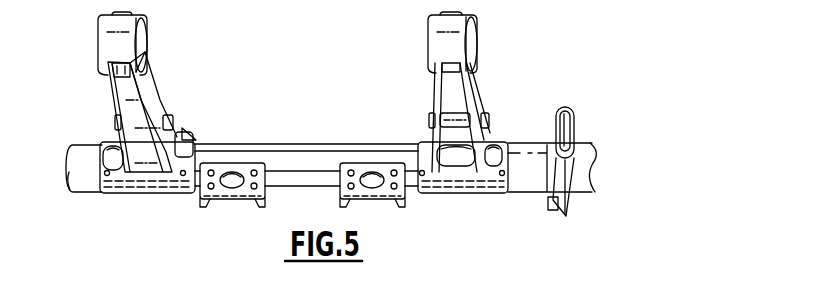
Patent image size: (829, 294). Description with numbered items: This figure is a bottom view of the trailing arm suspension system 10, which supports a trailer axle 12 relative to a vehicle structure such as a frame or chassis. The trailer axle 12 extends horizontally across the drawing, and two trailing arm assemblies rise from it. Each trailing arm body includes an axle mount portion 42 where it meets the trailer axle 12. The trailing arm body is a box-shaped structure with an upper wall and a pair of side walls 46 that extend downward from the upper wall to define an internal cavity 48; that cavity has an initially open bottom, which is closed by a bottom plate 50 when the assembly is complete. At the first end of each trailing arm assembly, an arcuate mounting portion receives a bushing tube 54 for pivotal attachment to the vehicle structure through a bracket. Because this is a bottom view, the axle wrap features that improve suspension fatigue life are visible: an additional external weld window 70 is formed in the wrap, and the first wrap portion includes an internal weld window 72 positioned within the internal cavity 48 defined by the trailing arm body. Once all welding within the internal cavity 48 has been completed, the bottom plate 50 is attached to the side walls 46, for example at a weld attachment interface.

The trailing arm suspension system 10 is at (607, 120).
The trailer axle 12 is at (297, 163).
The axle mount portion 42 is at (200, 153).
The side walls 46 is at (158, 98).
The internal cavity 48 is at (444, 97).
The bottom plate 50 is at (130, 100).
The bushing tube 54 is at (108, 45).
The external weld window 70 is at (102, 157).
The internal weld window 72 is at (458, 163).